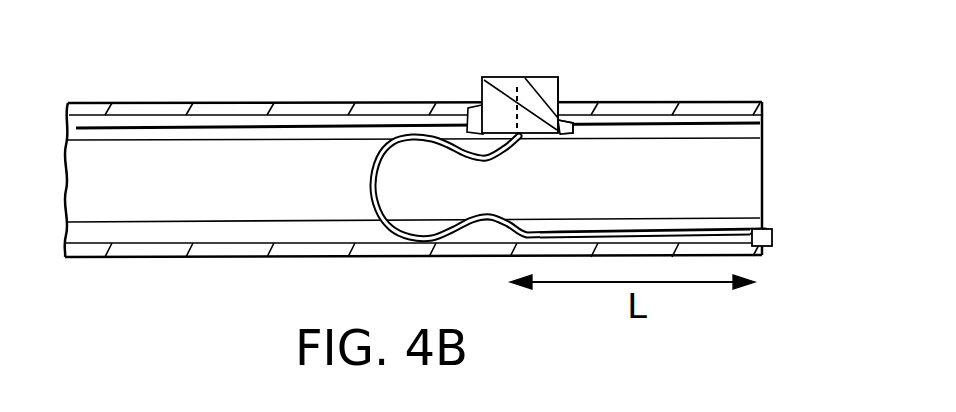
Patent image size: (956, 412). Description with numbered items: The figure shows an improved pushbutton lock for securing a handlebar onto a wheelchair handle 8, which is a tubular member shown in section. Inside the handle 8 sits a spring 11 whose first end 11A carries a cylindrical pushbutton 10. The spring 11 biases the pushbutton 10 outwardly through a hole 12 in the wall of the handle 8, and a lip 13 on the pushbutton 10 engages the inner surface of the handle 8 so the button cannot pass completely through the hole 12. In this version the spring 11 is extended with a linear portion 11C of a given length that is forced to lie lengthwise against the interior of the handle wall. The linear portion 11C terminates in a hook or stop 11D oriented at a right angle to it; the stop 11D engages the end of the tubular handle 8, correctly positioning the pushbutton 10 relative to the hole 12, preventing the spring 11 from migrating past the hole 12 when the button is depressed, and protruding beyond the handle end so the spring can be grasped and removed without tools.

The handle 8 is at (764, 178).
The pushbutton 10 is at (507, 77).
The spring 11 is at (373, 168).
The first end of the spring 11A is at (516, 130).
The linear portion of the spring 11C is at (540, 230).
The hook or stop 11D is at (808, 216).
The hole 12 is at (561, 114).
The lip 13 is at (573, 128).